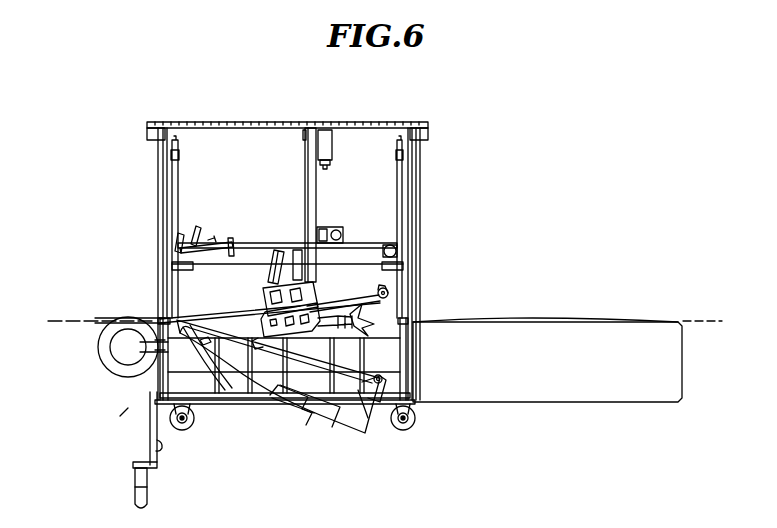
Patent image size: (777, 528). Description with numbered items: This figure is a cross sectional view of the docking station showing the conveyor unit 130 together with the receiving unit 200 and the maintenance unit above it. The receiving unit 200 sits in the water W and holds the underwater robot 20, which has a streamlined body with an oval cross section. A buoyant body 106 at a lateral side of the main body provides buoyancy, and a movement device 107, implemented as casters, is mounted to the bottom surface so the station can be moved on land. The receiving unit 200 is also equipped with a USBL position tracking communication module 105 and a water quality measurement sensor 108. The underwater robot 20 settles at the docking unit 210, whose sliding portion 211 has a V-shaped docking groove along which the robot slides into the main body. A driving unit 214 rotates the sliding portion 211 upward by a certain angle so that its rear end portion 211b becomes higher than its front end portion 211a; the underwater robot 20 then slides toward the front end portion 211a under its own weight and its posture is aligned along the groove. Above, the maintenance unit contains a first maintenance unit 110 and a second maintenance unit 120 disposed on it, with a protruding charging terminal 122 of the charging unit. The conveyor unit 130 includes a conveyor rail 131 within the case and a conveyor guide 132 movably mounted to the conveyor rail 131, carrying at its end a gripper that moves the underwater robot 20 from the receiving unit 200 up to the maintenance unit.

The receiving unit 200 is at (127, 404).
The second maintenance unit 120 is at (190, 172).
The first maintenance unit 110 is at (185, 282).
The charging terminal 122 is at (232, 242).
The conveyor unit 130 is at (326, 185).
The conveyor guide 132 is at (316, 207).
The conveyor rail 131 is at (368, 247).
The driving unit 214 is at (164, 318).
The water W is at (695, 320).
The buoyant body 106 is at (100, 348).
The movement device 107 is at (182, 425).
The water quality measurement sensor 108 is at (152, 447).
The USBL communication module 105 is at (148, 487).
The docking unit 210 is at (318, 440).
The sliding portion 211 is at (347, 413).
The underwater robot 20 is at (291, 402).
The front end portion 211a is at (212, 343).
The rear end portion 211b is at (383, 400).